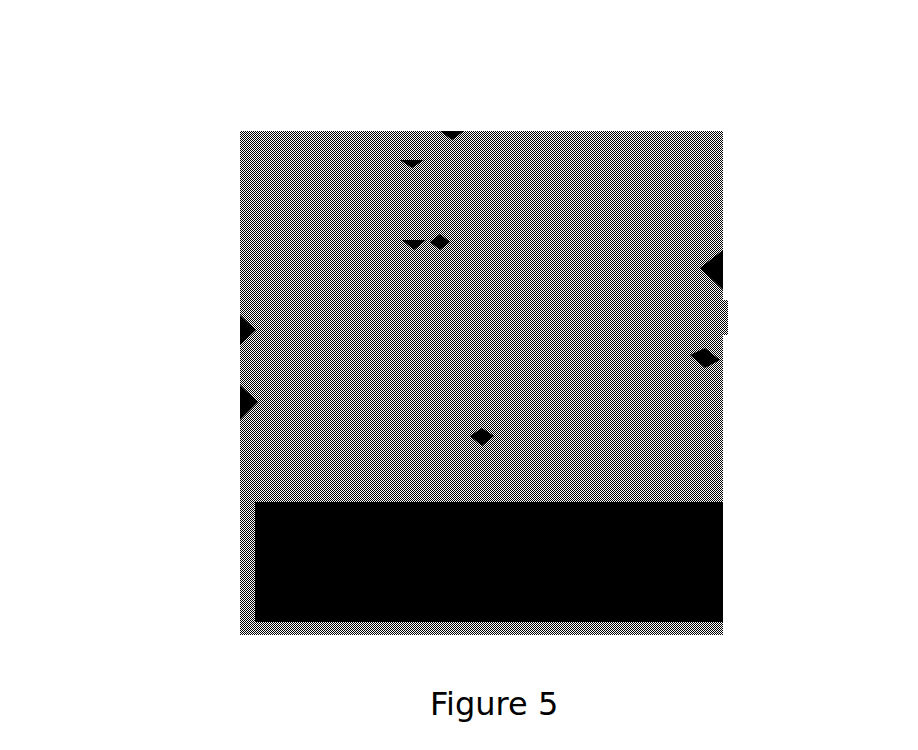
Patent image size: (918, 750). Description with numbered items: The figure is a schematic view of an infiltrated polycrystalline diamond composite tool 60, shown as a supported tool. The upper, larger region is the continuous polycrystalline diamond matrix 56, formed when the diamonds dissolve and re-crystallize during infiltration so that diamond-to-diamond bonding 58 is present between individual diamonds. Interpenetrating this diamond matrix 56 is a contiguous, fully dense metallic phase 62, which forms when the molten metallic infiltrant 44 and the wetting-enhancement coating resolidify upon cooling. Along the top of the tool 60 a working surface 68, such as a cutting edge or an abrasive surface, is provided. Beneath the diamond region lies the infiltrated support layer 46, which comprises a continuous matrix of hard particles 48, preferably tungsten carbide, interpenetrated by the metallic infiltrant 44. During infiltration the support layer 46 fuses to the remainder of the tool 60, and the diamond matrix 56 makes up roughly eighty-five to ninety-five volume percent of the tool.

The infiltrated polycrystalline diamond composite tool 60 is at (43, 136).
The working surface 68 is at (452, 130).
The diamond-to-diamond bonding 58 is at (412, 245).
The metallic phase 62 is at (240, 359).
The continuous polycrystalline diamond matrix 56 is at (640, 301).
The infiltrated support layer 46 is at (723, 502).
The hard particles 48 is at (240, 563).
The metallic infiltrant 44 is at (318, 635).